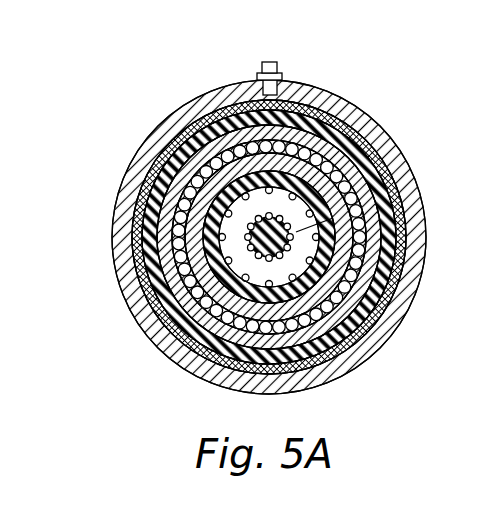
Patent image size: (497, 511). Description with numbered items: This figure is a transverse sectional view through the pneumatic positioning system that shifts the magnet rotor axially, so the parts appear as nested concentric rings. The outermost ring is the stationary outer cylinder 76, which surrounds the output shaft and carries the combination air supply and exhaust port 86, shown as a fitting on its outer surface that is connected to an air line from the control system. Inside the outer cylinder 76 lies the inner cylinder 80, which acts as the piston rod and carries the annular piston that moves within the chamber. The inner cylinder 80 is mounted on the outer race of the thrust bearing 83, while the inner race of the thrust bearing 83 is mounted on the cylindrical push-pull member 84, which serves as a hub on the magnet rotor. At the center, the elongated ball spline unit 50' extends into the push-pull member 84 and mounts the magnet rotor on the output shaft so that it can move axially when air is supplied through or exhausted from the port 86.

The elongated ball spline unit 50' is at (267, 210).
The stationary outer cylinder 76 is at (203, 97).
The inner cylinder 80 is at (158, 155).
The thrust bearing 83 is at (183, 205).
The push-pull member 84 is at (222, 248).
The combination air supply and exhaust port 86 is at (270, 62).